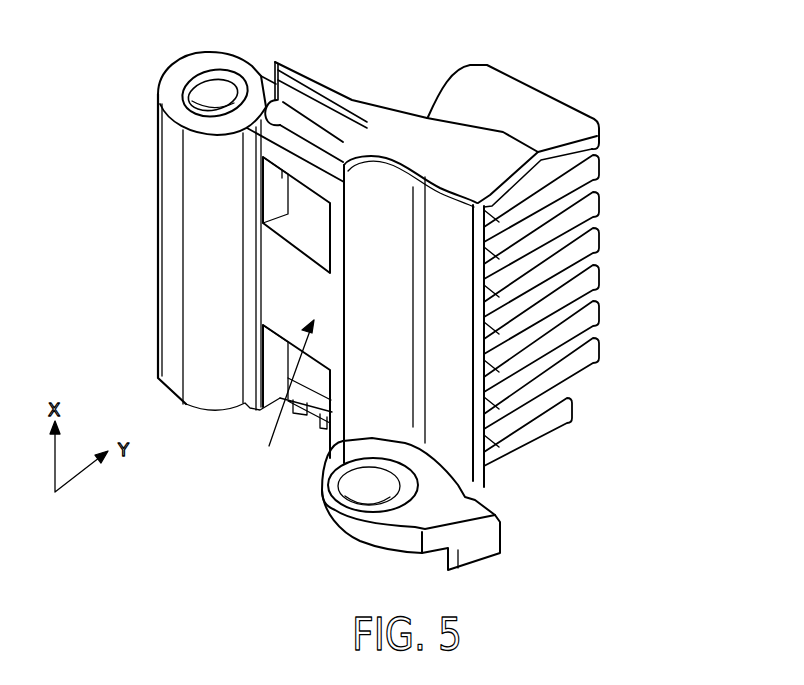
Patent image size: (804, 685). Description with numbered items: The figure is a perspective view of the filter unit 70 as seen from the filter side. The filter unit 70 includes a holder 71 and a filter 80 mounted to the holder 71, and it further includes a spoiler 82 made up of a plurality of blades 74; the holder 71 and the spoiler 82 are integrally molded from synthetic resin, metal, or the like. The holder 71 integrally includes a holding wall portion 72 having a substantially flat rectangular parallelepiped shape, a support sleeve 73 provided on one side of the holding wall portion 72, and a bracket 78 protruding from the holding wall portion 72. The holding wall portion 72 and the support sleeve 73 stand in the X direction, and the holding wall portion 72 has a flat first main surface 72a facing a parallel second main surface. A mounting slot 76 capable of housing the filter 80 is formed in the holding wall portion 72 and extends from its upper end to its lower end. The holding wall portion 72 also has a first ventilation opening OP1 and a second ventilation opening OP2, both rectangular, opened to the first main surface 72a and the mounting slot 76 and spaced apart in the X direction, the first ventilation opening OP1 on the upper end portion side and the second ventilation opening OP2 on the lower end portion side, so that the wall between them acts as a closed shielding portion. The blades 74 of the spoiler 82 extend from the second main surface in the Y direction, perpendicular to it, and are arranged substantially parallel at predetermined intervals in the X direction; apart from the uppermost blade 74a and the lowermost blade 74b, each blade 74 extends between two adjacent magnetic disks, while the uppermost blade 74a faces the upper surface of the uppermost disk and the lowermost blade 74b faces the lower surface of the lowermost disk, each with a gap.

The filter unit 70 is at (385, 74).
The holder 71 is at (286, 400).
The holding wall portion 72 is at (283, 300).
The first main surface 72a is at (270, 265).
The support sleeve 73 is at (203, 235).
The blades 74 is at (578, 124).
The uppermost blade 74a is at (467, 146).
The lowermost blade 74b is at (571, 421).
The mounting slot 76 is at (279, 66).
The bracket 78 is at (424, 513).
The filter 80 is at (310, 124).
The spoiler 82 is at (613, 159).
The first ventilation opening OP1 is at (272, 187).
The second ventilation opening OP2 is at (273, 363).